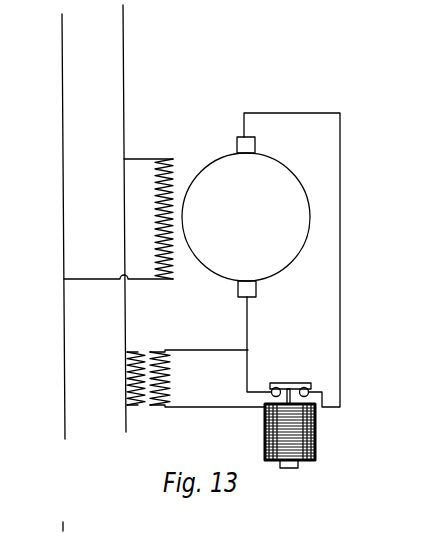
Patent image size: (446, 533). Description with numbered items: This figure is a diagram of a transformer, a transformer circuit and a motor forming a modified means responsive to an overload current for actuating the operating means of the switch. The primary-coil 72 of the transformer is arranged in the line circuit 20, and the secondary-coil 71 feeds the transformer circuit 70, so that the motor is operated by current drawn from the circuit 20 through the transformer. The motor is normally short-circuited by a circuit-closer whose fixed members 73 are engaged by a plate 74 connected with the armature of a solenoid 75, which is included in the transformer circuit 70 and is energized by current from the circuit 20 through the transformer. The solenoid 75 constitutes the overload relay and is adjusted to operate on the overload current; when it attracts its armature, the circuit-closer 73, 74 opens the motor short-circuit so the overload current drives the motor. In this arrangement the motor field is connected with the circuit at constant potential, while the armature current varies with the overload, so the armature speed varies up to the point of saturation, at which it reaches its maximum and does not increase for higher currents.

The circuit 20 is at (125, 80).
The transformer circuit 70 is at (230, 407).
The secondary-coil 71 is at (167, 389).
The primary-coil 72 is at (127, 378).
The fixed members 73 is at (304, 384).
The plate 74 is at (306, 383).
The solenoid 75 is at (315, 443).